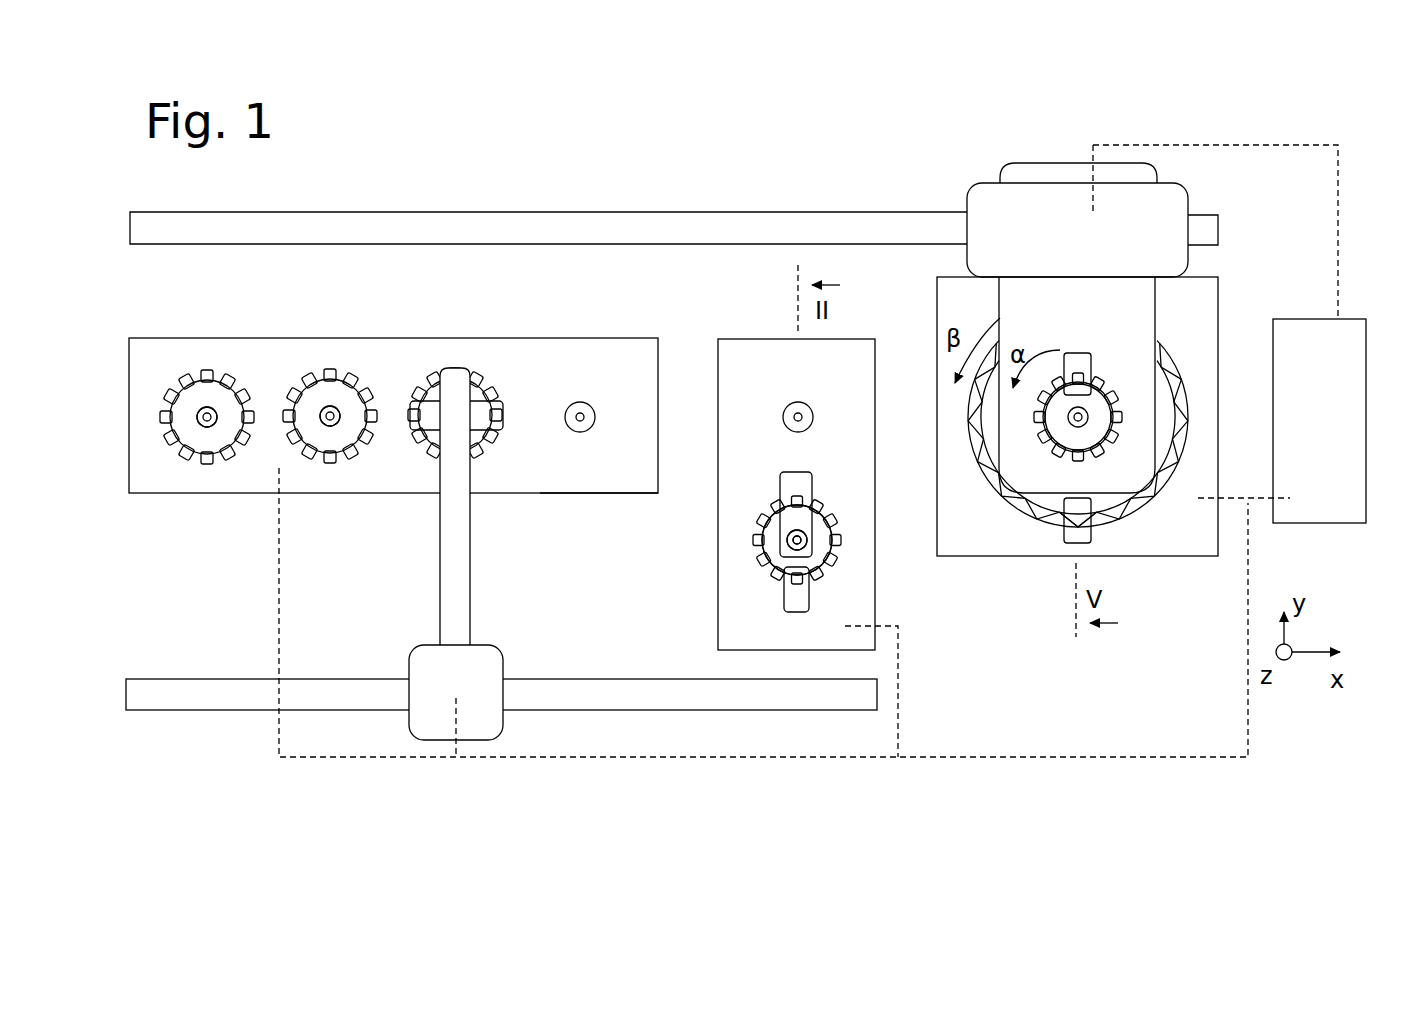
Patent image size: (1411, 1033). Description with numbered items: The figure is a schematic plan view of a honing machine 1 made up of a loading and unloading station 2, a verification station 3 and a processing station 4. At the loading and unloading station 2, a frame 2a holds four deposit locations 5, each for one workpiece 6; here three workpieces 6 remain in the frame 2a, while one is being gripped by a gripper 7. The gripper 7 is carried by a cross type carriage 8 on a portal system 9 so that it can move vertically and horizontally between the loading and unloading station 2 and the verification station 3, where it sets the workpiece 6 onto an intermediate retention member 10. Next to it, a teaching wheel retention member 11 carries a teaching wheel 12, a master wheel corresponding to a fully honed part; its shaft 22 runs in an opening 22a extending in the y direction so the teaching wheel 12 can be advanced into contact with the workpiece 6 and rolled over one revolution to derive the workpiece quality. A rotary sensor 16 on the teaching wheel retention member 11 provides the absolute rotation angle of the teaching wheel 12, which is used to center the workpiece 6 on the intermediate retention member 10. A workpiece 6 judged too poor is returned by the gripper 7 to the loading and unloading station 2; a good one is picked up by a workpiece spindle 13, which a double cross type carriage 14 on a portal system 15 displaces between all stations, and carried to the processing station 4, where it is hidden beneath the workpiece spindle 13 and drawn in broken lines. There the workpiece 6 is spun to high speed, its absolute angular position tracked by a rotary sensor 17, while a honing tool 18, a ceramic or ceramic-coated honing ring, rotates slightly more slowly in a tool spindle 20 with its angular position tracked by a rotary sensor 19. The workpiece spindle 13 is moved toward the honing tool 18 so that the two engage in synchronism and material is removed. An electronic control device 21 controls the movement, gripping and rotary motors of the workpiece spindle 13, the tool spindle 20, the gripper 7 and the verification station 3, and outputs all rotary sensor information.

The honing machine 1 is at (432, 183).
The loading and unloading station 2 is at (237, 505).
The frame 2a is at (580, 493).
The verification station 3 is at (705, 575).
The processing station 4 is at (1002, 578).
The deposit location 5 is at (210, 357).
The workpiece 6 is at (192, 440).
The gripper 7 is at (458, 415).
The cross type carriage 8 is at (483, 660).
The portal system 9 is at (208, 700).
The intermediate retention member 10 is at (787, 388).
The teaching wheel retention member 11 is at (772, 540).
The teaching wheel 12 is at (775, 525).
The workpiece spindle 13 is at (1013, 303).
The double cross type carriage 14 is at (987, 195).
The portal system 15 is at (527, 230).
The rotary sensor 16 is at (790, 592).
The rotary sensor 17 is at (1078, 355).
The honing tool 18 is at (1163, 370).
The rotary sensor 19 is at (1066, 540).
The tool spindle 20 is at (1122, 527).
The electronic control device 21 is at (1337, 490).
The shaft 22 is at (800, 537).
The opening 22a is at (800, 475).